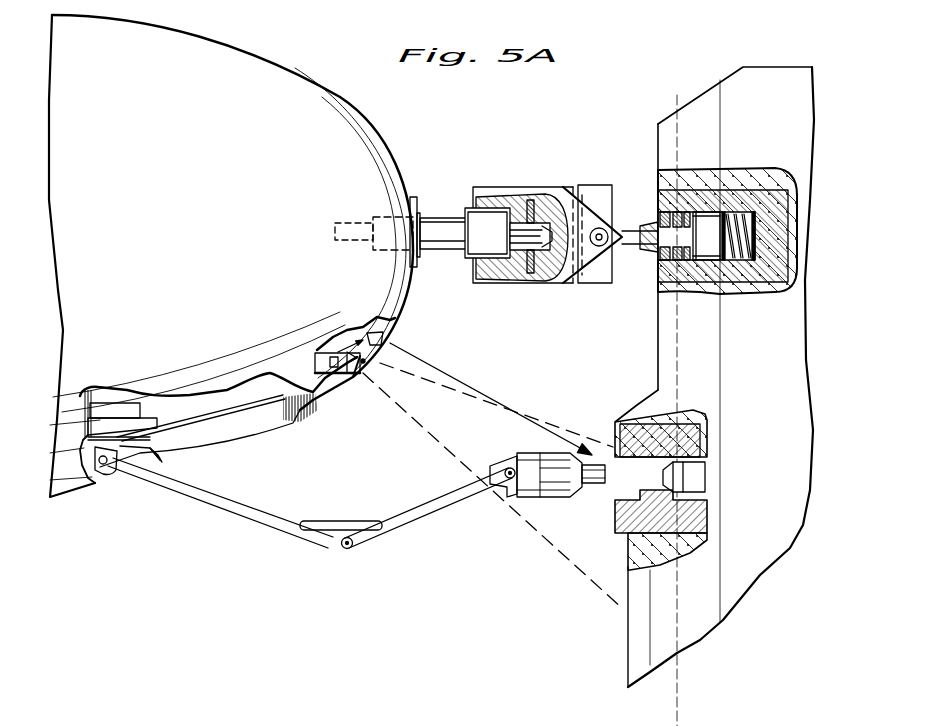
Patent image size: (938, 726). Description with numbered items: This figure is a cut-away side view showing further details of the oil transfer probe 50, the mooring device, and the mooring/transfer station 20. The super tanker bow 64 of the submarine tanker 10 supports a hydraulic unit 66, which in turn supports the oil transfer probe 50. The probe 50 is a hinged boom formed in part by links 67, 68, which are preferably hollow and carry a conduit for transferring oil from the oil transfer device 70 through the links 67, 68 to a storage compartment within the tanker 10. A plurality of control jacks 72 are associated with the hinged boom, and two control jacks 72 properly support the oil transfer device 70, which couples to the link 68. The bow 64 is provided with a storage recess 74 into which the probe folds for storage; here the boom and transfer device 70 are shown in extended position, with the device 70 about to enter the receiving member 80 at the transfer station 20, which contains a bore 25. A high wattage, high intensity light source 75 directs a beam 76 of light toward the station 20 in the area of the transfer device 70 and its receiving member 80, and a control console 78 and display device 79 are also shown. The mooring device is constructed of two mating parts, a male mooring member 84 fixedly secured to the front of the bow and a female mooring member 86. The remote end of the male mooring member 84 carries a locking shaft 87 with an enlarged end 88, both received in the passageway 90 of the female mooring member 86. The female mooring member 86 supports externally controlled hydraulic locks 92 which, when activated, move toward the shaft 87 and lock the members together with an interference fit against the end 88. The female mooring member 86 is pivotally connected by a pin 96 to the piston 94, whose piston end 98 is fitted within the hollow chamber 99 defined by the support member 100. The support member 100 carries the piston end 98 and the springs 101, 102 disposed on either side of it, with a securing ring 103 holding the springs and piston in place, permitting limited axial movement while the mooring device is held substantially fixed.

The submarine tanker 10 is at (294, 103).
The mooring/transfer station 20 is at (683, 367).
The bore 25 is at (684, 474).
The oil transfer probe 50 is at (403, 524).
The super tanker bow 64 is at (340, 193).
The hydraulic unit 66 is at (107, 423).
The link 67 is at (250, 513).
The link 68 is at (413, 510).
The oil transfer device 70 is at (550, 493).
The control jacks 72 is at (190, 462).
The storage recess 74 is at (244, 430).
The light source 75 is at (374, 372).
The beam of light 76 is at (503, 427).
The control console 78 is at (333, 350).
The display device 79 is at (367, 325).
The receiving member 80 is at (612, 432).
The male mooring member 84 is at (442, 229).
The female mooring member 86 is at (561, 189).
The locking shaft 87 is at (520, 267).
The enlarged end 88 is at (540, 268).
The passageway 90 is at (518, 222).
The hydraulic locks 92 is at (532, 198).
The piston 94 is at (619, 212).
The pin 96 is at (602, 247).
The piston end 98 is at (710, 223).
The hollow chamber 99 is at (762, 284).
The support member 100 is at (763, 178).
The spring 101 is at (678, 312).
The spring 102 is at (738, 262).
The securing ring 103 is at (655, 213).